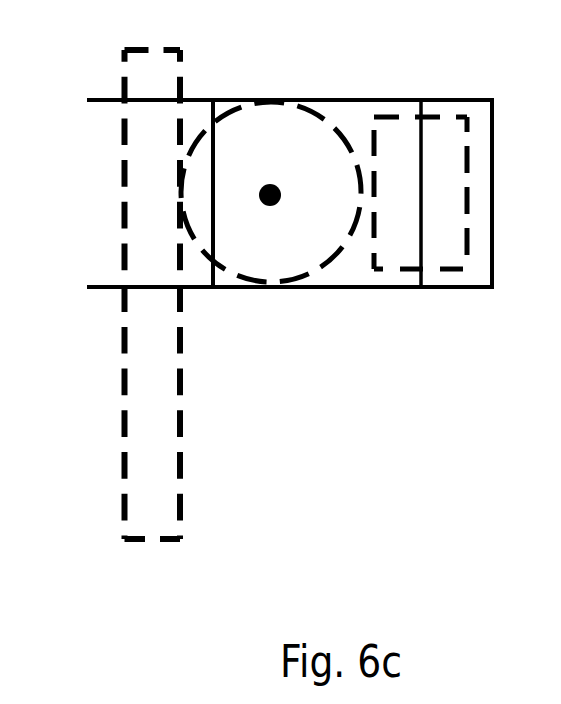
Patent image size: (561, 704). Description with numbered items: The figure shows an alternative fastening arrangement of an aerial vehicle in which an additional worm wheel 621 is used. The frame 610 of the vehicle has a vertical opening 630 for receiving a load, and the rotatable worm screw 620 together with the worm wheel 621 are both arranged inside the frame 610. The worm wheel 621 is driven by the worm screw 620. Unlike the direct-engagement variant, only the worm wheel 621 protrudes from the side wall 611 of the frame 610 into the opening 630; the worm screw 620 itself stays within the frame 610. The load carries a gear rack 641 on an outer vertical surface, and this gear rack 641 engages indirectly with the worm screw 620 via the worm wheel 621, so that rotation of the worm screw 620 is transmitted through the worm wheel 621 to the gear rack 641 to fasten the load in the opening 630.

The frame 610 is at (390, 100).
The side wall 611 is at (213, 101).
The rotatable worm screw 620 is at (444, 245).
The worm wheel 621 is at (265, 247).
The vertical opening 630 is at (197, 108).
The gear rack 641 is at (168, 454).